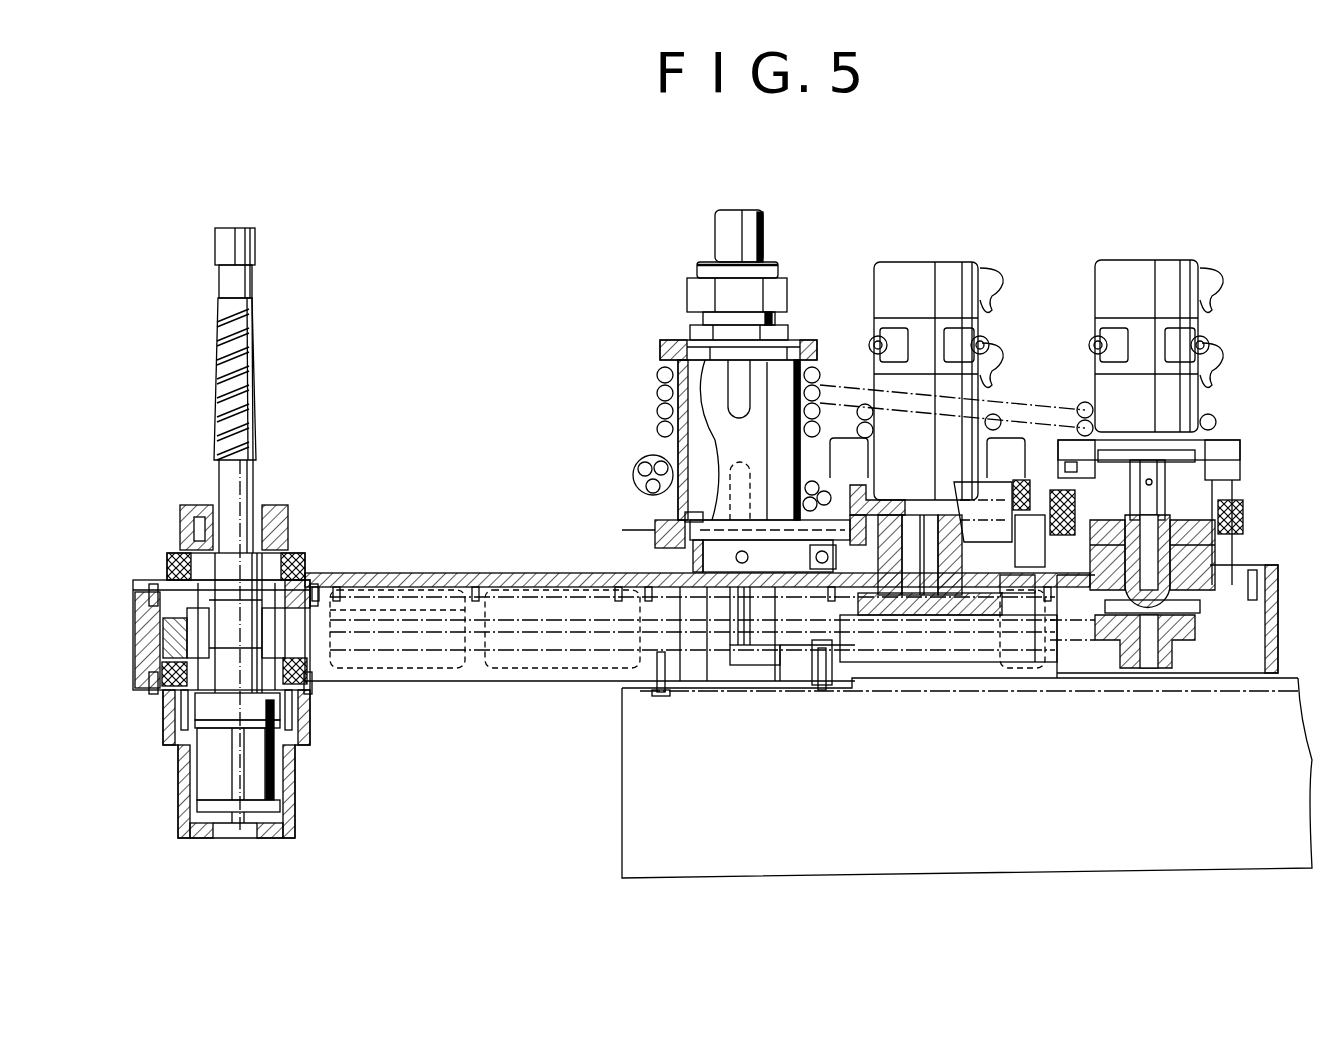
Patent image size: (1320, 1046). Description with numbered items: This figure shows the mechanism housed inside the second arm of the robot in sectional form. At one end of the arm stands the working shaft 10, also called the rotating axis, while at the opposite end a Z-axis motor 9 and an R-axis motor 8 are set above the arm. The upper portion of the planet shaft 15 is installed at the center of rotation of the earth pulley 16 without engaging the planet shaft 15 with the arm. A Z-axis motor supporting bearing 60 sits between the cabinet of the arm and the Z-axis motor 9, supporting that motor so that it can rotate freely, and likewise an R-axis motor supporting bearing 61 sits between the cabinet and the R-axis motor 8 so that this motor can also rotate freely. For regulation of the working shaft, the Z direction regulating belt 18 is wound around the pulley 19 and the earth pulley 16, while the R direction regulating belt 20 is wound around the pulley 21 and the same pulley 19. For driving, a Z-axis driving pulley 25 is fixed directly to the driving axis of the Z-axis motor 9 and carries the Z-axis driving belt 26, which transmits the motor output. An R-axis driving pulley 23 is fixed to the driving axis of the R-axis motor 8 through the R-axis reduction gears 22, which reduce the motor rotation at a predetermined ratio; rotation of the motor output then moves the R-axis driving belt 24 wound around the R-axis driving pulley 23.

The R-axis motor 8 is at (1155, 270).
The Z-axis motor 9 is at (927, 272).
The working shaft 10 is at (297, 790).
The planet shaft 15 is at (735, 660).
The earth pulley 16 is at (655, 532).
The Z direction regulating belt 18 is at (830, 525).
The pulley 19 is at (1008, 485).
The R direction regulating belt 20 is at (1052, 500).
The pulley 21 is at (1240, 475).
The R-axis reduction gears 22 is at (1182, 568).
The R-axis driving pulley 23 is at (1178, 640).
The R-axis driving belt 24 is at (525, 638).
The Z-axis driving pulley 25 is at (950, 618).
The Z-axis driving belt 26 is at (405, 612).
The Z-axis motor supporting bearing 60 is at (887, 525).
The R-axis motor supporting bearing 61 is at (1243, 515).